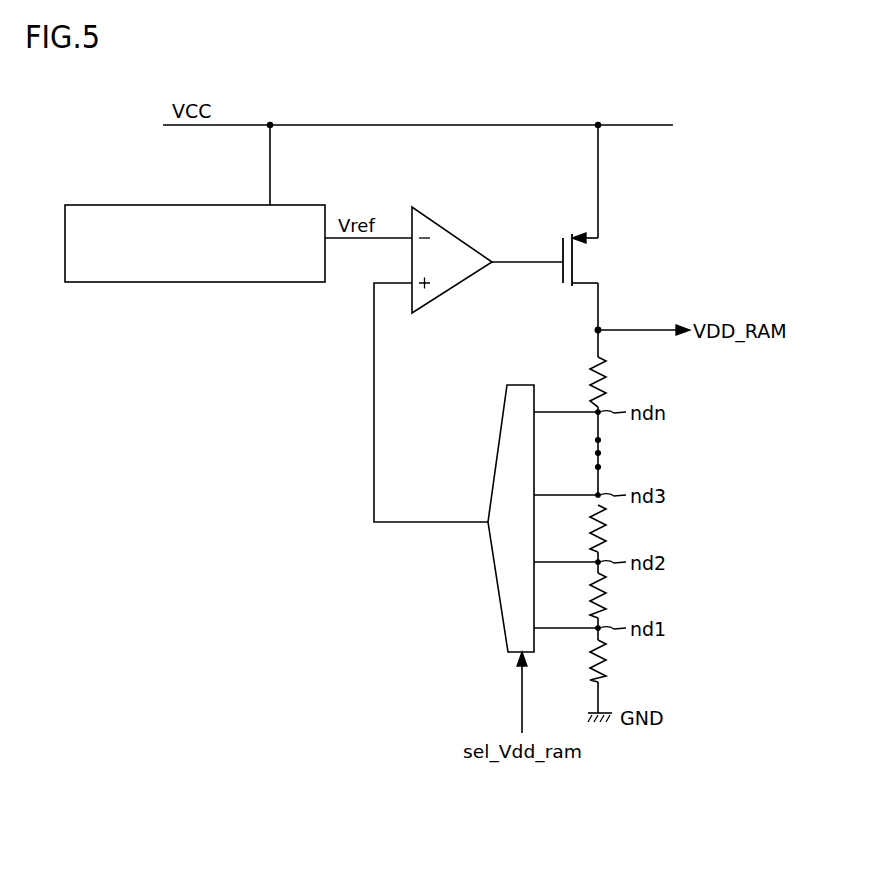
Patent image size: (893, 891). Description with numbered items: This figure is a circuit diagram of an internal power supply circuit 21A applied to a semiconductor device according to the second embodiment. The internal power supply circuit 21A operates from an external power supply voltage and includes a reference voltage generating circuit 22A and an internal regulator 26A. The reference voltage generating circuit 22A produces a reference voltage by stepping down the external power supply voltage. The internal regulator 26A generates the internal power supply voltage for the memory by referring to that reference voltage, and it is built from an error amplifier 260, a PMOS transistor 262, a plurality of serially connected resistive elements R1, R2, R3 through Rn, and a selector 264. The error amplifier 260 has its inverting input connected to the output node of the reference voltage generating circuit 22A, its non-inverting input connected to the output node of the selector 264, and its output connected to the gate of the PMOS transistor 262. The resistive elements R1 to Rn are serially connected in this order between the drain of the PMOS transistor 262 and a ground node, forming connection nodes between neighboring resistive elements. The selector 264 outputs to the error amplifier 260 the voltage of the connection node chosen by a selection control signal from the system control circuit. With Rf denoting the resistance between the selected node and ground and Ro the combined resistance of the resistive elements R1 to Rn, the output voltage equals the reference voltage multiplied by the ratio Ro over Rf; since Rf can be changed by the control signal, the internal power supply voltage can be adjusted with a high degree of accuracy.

The internal power supply circuit 21A is at (295, 465).
The reference voltage generating circuit 22A is at (276, 283).
The internal regulator 26A is at (676, 230).
The error amplifier 260 is at (448, 230).
The PMOS transistor 262 is at (588, 262).
The selector 264 is at (498, 433).
The combined resistance value Ro is at (648, 530).
The resistance value between selected node and ground node Rf is at (464, 530).
The resistive element Rn is at (606, 382).
The resistive element R3 is at (606, 533).
The resistive element R2 is at (606, 598).
The resistive element R1 is at (622, 661).